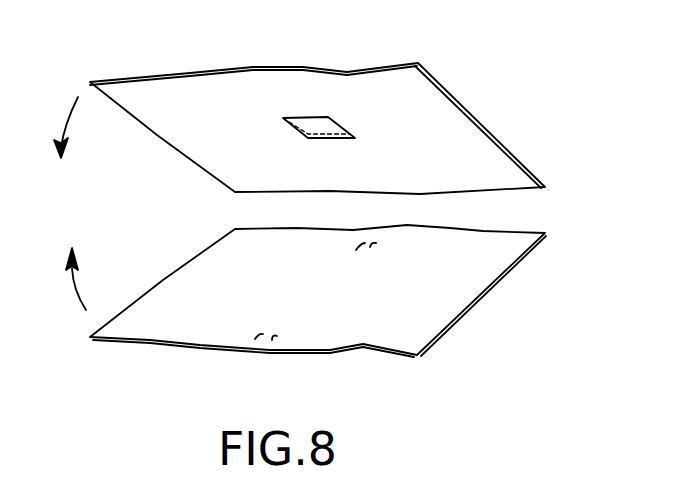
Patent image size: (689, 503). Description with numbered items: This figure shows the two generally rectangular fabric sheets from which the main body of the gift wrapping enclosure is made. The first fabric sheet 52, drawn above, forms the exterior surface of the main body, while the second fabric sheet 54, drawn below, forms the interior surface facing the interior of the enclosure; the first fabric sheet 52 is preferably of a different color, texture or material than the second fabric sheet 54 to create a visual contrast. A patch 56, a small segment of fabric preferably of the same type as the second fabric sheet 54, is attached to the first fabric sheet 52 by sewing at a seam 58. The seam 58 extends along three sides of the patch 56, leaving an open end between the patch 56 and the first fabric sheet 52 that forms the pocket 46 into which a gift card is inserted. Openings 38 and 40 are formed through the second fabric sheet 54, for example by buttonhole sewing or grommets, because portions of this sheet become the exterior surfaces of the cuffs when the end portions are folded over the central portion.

The opening 38 is at (373, 245).
The opening 40 is at (353, 248).
The pocket 46 is at (302, 112).
The first fabric sheet 52 is at (410, 88).
The second fabric sheet 54 is at (440, 300).
The patch 56 is at (320, 128).
The seam 58 is at (337, 129).